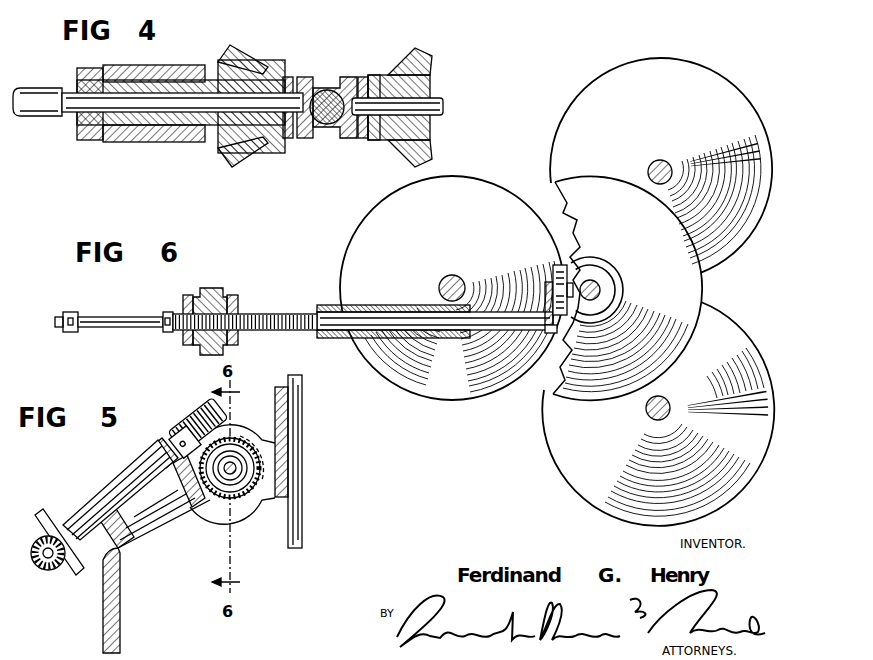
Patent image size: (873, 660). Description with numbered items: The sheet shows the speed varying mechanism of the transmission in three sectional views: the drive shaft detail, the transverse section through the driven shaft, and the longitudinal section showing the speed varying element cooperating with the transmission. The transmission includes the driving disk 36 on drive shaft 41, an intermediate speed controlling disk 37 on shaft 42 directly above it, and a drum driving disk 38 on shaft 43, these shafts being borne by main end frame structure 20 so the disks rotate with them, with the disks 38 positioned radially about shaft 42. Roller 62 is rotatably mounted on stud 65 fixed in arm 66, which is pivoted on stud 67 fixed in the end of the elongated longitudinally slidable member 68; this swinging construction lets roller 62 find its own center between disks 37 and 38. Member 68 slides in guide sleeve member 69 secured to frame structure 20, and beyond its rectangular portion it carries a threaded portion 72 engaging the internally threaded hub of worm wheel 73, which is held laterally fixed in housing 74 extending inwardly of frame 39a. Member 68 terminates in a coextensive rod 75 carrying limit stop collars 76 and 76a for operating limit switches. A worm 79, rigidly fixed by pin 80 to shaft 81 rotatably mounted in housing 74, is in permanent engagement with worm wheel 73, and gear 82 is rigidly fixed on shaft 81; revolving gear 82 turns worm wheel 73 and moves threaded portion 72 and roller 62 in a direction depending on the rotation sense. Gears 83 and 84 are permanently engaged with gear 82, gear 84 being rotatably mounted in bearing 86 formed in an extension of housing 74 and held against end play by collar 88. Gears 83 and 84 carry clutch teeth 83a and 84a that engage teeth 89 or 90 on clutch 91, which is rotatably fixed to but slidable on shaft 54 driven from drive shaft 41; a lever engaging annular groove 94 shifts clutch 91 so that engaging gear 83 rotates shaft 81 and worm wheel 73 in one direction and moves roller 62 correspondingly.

In FIG. 5, the main end frame structure 20 is at (302, 467).
In FIG. 6, the driving disk 36 is at (725, 330).
In FIG. 6, the intermediate speed controlling disk 37 is at (593, 180).
In FIG. 6, the drum driving disk 38 is at (370, 223).
In FIG. 5, the frame extension 39a is at (116, 605).
In FIG. 6, the drive shaft 41 is at (667, 403).
In FIG. 6, the shaft 42 is at (612, 280).
In FIG. 6, the shaft 43 is at (440, 278).
In FIG. 4, the shaft 54 is at (32, 114).
In FIG. 6, the roller 62 is at (572, 255).
In FIG. 6, the stud 65 is at (556, 268).
In FIG. 6, the arm 66 is at (545, 303).
In FIG. 6, the stud 67 is at (548, 372).
In FIG. 6, the elongated longitudinally slidable member 68 is at (372, 308).
In FIG. 6, the guide sleeve member 69 is at (395, 307).
In FIG. 6, the threaded portion 72 is at (282, 314).
In FIG. 6, the worm wheel 73 is at (210, 288).
In FIG. 5, the worm wheel 73 is at (237, 445).
In FIG. 6, the housing 74 is at (200, 352).
In FIG. 5, the housing 74 is at (163, 512).
In FIG. 6, the coextensive rod 75 is at (115, 318).
In FIG. 6, the limit stop collar 76 is at (170, 312).
In FIG. 6, the limit stop collar 76a is at (70, 333).
In FIG. 5, the worm 79 is at (197, 417).
In FIG. 5, the pin 80 is at (176, 440).
In FIG. 5, the shaft 81 is at (136, 472).
In FIG. 5, the gear 82 is at (43, 515).
In FIG. 4, the gear 83 is at (414, 50).
In FIG. 4, the clutch teeth 83a is at (369, 75).
In FIG. 4, the gear 84 is at (232, 58).
In FIG. 4, the clutch teeth 84a is at (288, 75).
In FIG. 4, the bearing 86 is at (150, 68).
In FIG. 4, the collar 88 is at (86, 67).
In FIG. 4, the teeth 89 is at (356, 75).
In FIG. 4, the teeth 90 is at (300, 78).
In FIG. 4, the clutch 91 is at (305, 137).
In FIG. 4, the annular groove 94 is at (328, 130).